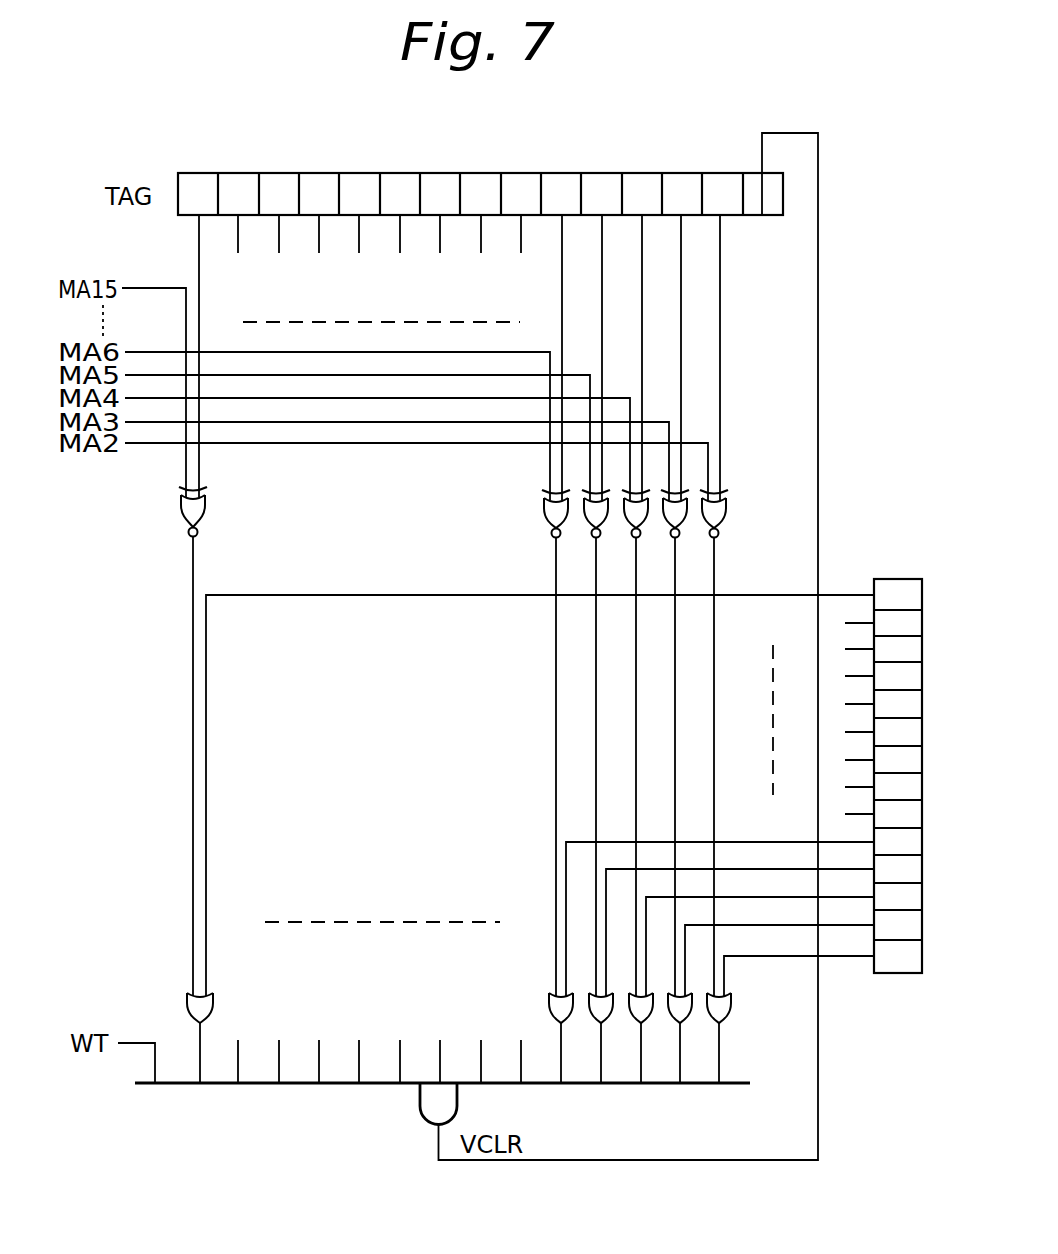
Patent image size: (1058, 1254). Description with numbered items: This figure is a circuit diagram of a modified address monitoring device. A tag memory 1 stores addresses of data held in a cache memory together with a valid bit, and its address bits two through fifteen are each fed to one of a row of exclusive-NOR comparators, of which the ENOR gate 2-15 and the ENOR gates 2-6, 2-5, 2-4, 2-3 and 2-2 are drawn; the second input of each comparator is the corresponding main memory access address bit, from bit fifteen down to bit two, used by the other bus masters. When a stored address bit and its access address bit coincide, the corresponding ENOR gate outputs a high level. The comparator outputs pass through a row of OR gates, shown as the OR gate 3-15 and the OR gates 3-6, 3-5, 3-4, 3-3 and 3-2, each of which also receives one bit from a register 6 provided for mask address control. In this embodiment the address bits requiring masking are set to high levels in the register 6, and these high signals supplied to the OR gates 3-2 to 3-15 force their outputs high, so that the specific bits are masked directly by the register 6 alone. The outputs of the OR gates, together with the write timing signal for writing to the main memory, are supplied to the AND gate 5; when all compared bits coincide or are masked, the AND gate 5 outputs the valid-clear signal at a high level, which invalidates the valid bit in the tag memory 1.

The tag memory 1 is at (762, 215).
The ENOR gate 2-15 is at (206, 507).
The ENOR gate 2-6 is at (544, 506).
The ENOR gate 2-5 is at (589, 532).
The ENOR gate 2-4 is at (628, 525).
The ENOR gate 2-3 is at (684, 526).
The ENOR gate 2-2 is at (726, 507).
The OR gate 3-15 is at (213, 1008).
The OR gate 3-6 is at (549, 1002).
The OR gate 3-5 is at (597, 1021).
The OR gate 3-4 is at (641, 1022).
The OR gate 3-3 is at (687, 1018).
The OR gate 3-2 is at (732, 1004).
The AND gate 5 is at (420, 1105).
The register 6 is at (893, 579).